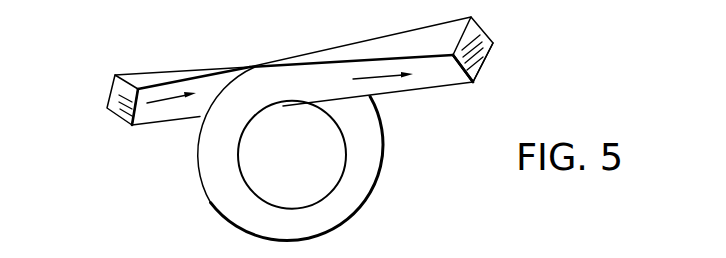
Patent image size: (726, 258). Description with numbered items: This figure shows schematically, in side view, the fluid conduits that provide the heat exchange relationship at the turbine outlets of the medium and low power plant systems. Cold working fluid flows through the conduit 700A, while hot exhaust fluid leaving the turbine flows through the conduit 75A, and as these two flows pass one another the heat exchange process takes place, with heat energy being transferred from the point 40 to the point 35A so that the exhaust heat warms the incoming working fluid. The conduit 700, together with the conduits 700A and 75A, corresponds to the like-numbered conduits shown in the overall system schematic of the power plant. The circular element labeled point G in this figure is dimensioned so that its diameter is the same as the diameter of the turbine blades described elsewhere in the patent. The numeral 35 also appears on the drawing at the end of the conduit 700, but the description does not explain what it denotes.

The conduit 700 is at (108, 98).
The strip end face 35 is at (128, 115).
The conduit 700A is at (475, 30).
The point 35A is at (482, 48).
The point 40 is at (482, 65).
The conduit 75A is at (469, 83).
The point G is at (368, 177).